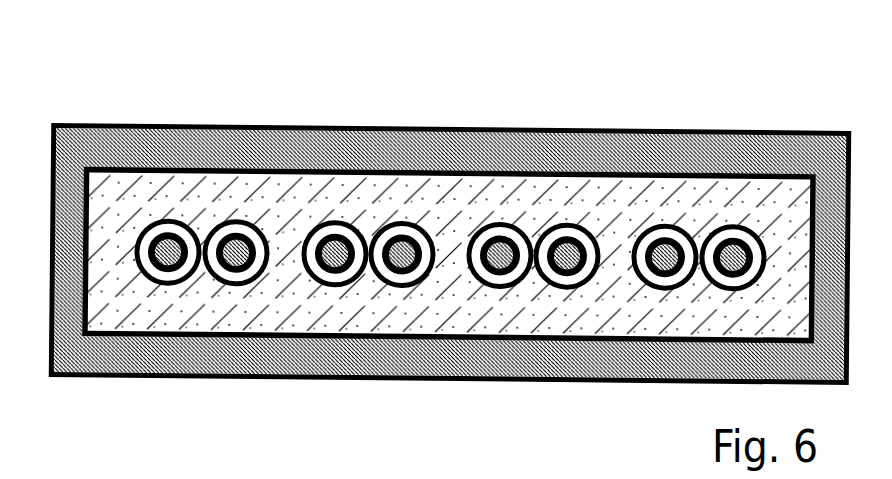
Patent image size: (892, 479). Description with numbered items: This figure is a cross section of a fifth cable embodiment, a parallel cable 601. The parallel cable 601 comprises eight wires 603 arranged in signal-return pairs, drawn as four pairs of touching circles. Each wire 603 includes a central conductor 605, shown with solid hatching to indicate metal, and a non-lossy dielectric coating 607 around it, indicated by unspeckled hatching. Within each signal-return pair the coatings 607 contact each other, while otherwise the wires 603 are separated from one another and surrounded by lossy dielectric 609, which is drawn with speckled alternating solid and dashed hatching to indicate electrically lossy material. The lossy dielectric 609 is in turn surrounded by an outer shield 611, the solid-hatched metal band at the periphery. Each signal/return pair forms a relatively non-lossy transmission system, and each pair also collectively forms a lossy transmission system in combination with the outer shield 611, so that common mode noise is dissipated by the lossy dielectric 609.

The parallel cable 601 is at (148, 117).
The wire 603 is at (396, 210).
The conductor 605 is at (566, 247).
The non-lossy dielectric coating 607 is at (728, 225).
The lossy dielectric 609 is at (469, 216).
The outer shield 611 is at (457, 160).